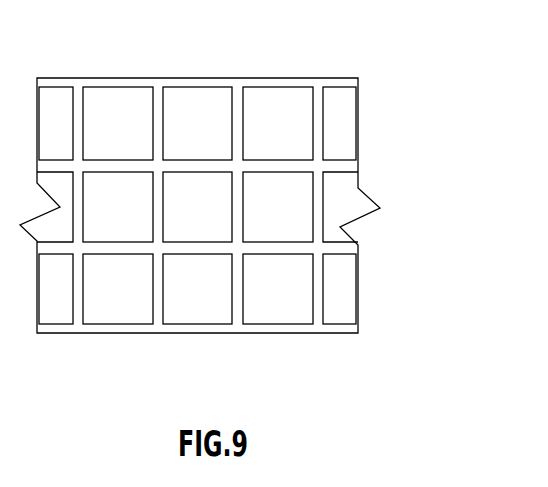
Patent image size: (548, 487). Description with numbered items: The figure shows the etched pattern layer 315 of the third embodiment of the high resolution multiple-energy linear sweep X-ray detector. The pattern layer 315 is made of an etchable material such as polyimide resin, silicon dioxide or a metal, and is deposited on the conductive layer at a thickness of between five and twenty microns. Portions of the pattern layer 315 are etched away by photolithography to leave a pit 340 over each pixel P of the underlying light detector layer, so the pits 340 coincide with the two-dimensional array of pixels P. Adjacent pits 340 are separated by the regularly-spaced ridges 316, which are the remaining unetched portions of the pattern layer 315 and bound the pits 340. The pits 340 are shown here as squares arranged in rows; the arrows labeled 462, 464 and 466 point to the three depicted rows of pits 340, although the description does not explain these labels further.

The pattern layer 315 is at (311, 55).
The pits 340 is at (181, 103).
The pixels P is at (108, 88).
The ridges 316 is at (283, 243).
The first row of pixels 462 is at (378, 125).
The second row of pixels 464 is at (378, 208).
The third row of pixels 466 is at (378, 292).